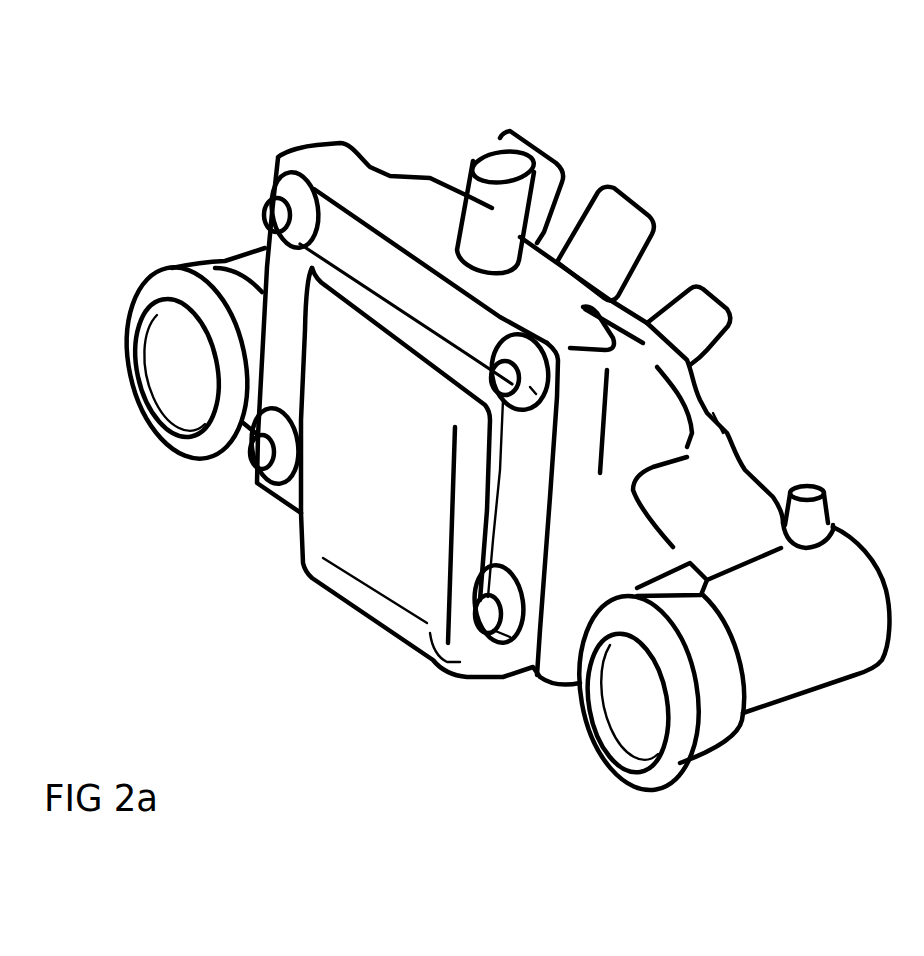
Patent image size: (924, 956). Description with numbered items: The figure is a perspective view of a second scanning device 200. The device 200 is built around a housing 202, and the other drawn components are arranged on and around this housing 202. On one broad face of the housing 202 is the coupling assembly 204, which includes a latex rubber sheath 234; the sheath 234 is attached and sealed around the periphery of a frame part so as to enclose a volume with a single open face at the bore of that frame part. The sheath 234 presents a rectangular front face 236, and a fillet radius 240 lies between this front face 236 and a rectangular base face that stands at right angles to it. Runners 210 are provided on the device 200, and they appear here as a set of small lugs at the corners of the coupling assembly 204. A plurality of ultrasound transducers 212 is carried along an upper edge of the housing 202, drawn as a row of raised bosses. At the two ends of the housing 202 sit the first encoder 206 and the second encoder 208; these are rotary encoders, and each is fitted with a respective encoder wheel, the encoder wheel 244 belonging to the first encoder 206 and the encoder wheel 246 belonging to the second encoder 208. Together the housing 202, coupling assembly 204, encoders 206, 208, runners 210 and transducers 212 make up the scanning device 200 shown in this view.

The scanning device 200 is at (151, 146).
The housing 202 is at (405, 210).
The coupling assembly 204 is at (267, 608).
The first encoder 206 is at (150, 327).
The second encoder 208 is at (647, 752).
The runners 210 is at (283, 172).
The ultrasound transducers 212 is at (707, 300).
The latex rubber sheath 234 is at (347, 538).
The rectangular front face 236 is at (390, 486).
The fillet radius 240 is at (357, 603).
The encoder wheel 244 is at (157, 383).
The encoder wheel 246 is at (597, 737).